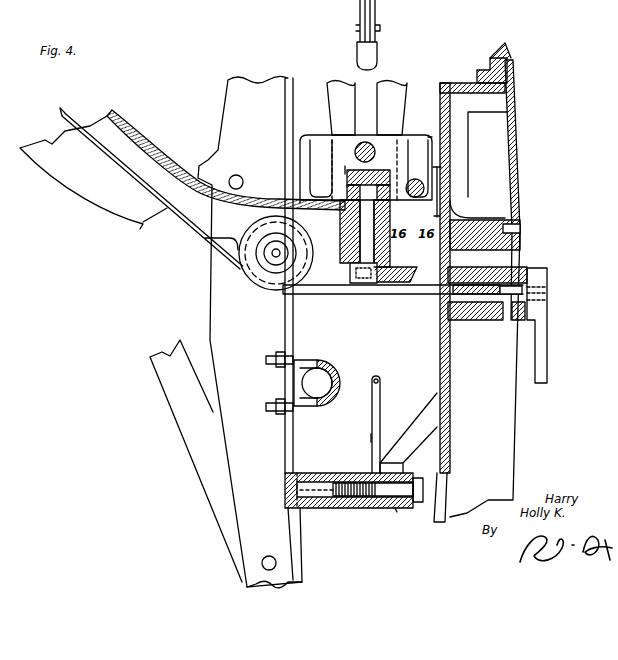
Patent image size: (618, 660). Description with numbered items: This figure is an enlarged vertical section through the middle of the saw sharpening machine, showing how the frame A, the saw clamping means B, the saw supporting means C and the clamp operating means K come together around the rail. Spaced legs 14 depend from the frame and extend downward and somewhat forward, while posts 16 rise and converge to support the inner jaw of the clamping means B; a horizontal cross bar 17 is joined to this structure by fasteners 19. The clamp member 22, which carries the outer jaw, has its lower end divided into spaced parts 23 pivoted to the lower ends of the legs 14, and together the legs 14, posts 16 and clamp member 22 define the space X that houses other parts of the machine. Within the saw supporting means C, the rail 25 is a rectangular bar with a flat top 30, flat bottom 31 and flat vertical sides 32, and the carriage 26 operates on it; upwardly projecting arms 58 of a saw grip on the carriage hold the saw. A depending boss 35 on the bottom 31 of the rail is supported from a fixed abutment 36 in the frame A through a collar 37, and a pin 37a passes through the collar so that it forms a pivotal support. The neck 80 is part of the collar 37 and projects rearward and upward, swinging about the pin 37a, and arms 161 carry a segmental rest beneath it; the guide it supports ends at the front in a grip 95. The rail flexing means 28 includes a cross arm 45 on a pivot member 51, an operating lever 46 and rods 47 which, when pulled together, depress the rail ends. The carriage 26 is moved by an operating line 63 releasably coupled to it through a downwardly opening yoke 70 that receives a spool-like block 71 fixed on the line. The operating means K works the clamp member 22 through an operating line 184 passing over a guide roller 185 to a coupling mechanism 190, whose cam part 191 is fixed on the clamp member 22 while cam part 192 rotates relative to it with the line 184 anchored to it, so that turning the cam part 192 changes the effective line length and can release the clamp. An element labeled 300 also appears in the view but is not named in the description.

The legs 14 is at (245, 552).
The posts 16 is at (230, 110).
The bar 17 is at (332, 372).
The fasteners 19 is at (308, 412).
The clamp member 22 is at (498, 434).
The parts 23 is at (450, 517).
The rail 25 is at (340, 186).
The carriage 26 is at (358, 150).
The rail flexing means 28 is at (371, 438).
The top 30 is at (375, 150).
The bottom 31 is at (368, 195).
The sides 32 is at (345, 170).
The boss 35 is at (340, 213).
The abutment 36 is at (340, 286).
The collar 37 is at (340, 243).
The pin 37a is at (408, 270).
The cross arm 45 is at (393, 496).
The operating lever 46 is at (423, 418).
The rods 47 is at (371, 409).
The pivot member 51 is at (396, 509).
The arms 58 is at (408, 82).
The operating line 63 is at (428, 190).
The yoke 70 is at (446, 171).
The block 71 is at (421, 182).
The neck 80 is at (160, 147).
The grip 95 is at (378, 53).
The arms 161 is at (188, 430).
The operating line 184 is at (150, 226).
The guide roller 185 is at (275, 289).
The coupling mechanism 190 is at (483, 320).
The cam part 191 is at (487, 272).
The cam part 192 is at (535, 270).
The box 300 is at (500, 140).
The frame A is at (210, 307).
The saw clamping means B is at (514, 67).
The saw supporting means C is at (337, 88).
The operating means K is at (549, 317).
The space X is at (418, 352).